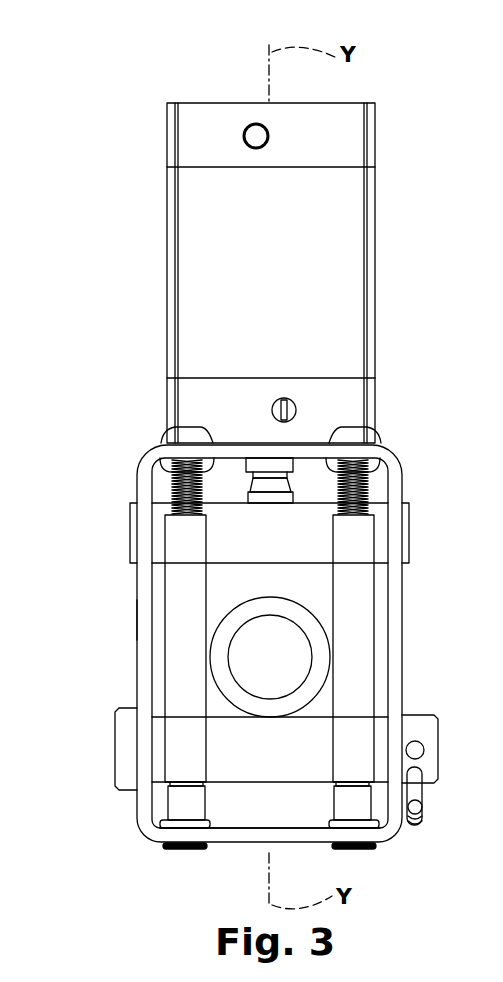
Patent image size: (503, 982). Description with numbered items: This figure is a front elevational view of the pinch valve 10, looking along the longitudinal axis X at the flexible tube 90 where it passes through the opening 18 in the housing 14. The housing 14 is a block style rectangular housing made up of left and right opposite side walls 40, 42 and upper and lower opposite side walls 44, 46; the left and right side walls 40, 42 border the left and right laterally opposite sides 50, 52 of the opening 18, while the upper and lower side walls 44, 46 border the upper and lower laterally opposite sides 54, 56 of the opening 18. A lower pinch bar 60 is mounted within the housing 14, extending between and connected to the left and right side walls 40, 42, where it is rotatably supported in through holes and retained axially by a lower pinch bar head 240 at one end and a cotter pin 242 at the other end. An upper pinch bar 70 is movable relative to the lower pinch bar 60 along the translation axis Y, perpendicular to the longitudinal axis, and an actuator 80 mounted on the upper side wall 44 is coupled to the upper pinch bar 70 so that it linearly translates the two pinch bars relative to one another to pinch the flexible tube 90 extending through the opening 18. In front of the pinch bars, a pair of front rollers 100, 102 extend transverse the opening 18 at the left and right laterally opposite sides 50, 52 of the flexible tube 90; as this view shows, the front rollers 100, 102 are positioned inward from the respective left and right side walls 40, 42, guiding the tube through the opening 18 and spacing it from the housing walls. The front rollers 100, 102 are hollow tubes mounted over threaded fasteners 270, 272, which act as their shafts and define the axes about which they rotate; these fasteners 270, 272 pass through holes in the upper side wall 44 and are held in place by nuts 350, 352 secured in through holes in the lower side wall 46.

The pinch valve 10 is at (150, 85).
The actuator 80 is at (222, 202).
The upper pinch bar 70 is at (301, 503).
The upper side wall 44 is at (257, 452).
The housing 14 is at (132, 466).
The upper laterally opposite side 54 is at (390, 452).
The threaded fastener 270 is at (175, 487).
The threaded fastener 272 is at (367, 483).
The right front roller 102 is at (405, 577).
The left front roller 100 is at (165, 586).
The opening 18 is at (312, 587).
The left side wall 40 is at (143, 620).
The right side wall 42 is at (397, 608).
The flexible tube 90 is at (212, 640).
The left laterally opposite side 50 is at (152, 673).
The right laterally opposite side 52 is at (393, 666).
The lower pinch bar head 240 is at (125, 782).
The cotter pin 242 is at (419, 805).
The nut 350 is at (182, 808).
The nut 352 is at (377, 803).
The lower laterally opposite side 56 is at (238, 806).
The lower side wall 46 is at (262, 840).
The lower pinch bar 60 is at (298, 784).